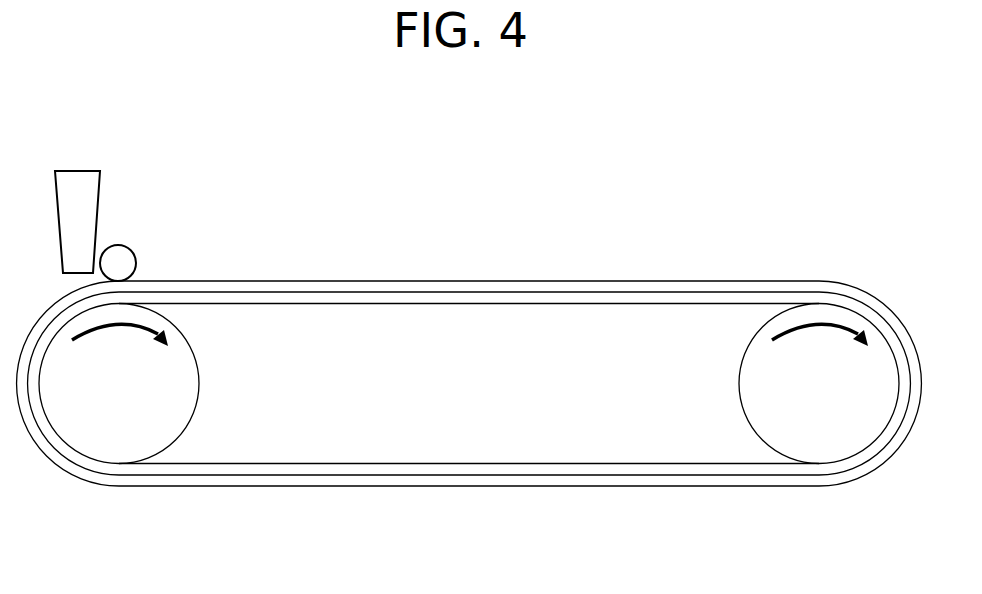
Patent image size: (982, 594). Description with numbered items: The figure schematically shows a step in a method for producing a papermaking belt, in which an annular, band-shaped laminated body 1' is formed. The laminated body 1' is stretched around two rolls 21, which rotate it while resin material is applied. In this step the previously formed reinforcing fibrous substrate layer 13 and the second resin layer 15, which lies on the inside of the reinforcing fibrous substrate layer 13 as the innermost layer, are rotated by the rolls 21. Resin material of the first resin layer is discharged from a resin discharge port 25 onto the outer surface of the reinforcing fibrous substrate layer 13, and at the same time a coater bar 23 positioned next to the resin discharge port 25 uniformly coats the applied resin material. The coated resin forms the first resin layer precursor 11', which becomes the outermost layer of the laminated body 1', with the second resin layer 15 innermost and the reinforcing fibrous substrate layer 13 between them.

The laminated body 1' is at (469, 334).
The first resin layer precursor 11' is at (469, 341).
The reinforcing fibrous substrate layer 13 is at (594, 293).
The second resin layer 15 is at (357, 295).
The rolls 21 is at (113, 428).
The coater bar 23 is at (118, 245).
The resin discharge port 25 is at (83, 170).